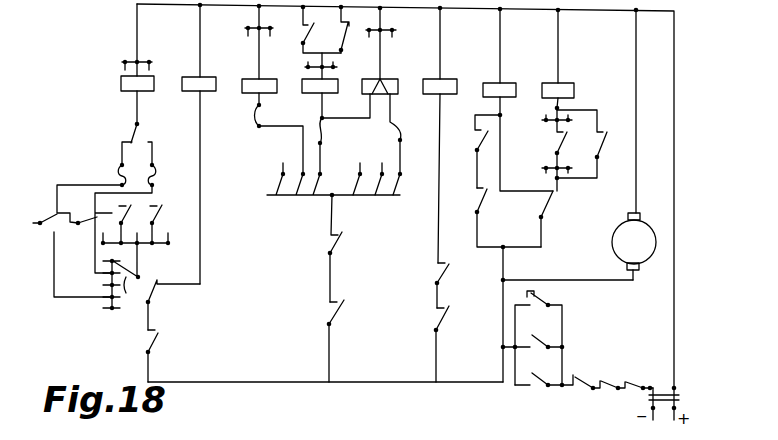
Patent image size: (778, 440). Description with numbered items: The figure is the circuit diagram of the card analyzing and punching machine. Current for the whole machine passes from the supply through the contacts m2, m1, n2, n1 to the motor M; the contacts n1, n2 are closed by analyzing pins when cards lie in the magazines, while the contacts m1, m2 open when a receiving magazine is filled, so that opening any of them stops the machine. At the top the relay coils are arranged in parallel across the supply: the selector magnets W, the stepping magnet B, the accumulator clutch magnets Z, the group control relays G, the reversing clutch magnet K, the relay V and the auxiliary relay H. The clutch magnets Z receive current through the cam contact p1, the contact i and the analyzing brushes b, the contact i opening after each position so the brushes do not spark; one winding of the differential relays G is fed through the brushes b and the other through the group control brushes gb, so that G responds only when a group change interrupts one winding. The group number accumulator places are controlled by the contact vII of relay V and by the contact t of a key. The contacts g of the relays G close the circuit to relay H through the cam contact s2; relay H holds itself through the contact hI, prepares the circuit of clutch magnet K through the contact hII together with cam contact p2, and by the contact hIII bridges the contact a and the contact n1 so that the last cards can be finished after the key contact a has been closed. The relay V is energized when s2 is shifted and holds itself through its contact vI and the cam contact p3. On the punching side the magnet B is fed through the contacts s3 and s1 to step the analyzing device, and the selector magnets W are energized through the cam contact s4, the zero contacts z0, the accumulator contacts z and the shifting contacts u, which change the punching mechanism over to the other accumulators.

The selector magnets W is at (108, 64).
The magnet B is at (199, 144).
The clutch magnets for the accumulators Z is at (306, 90).
The group control relays G is at (394, 91).
The clutch magnet K is at (441, 135).
The relay V is at (518, 100).
The auxiliary relay H is at (561, 60).
The motor M is at (634, 145).
The shifting contacts u is at (152, 150).
The contacts z0 is at (78, 208).
The contacts z is at (157, 200).
The cam contact s4 is at (121, 276).
The cam contact s1 is at (173, 305).
The contact s3 is at (161, 356).
The cam contact s2 is at (555, 212).
The analyzing brushes b is at (324, 170).
The group control brushes gb is at (396, 169).
The contact i is at (339, 248).
The cam contact p1 is at (344, 341).
The cam contact p2 is at (450, 344).
The cam contact p3 is at (494, 218).
The contact vII is at (321, 30).
The contact vI is at (475, 151).
The contact t is at (347, 30).
The contact hII is at (451, 285).
The contact hI is at (590, 144).
The contact hIII is at (539, 352).
The contacts g is at (546, 144).
The contact a is at (538, 316).
The contact n1 is at (539, 369).
The contact n2 is at (578, 371).
The contact m1 is at (606, 371).
The contact m2 is at (635, 371).